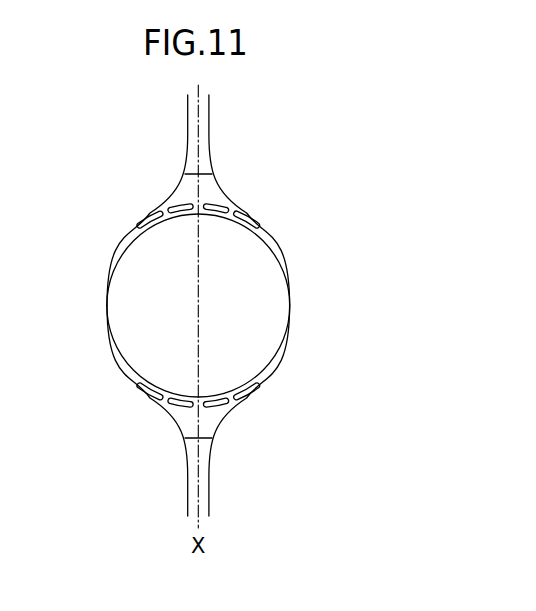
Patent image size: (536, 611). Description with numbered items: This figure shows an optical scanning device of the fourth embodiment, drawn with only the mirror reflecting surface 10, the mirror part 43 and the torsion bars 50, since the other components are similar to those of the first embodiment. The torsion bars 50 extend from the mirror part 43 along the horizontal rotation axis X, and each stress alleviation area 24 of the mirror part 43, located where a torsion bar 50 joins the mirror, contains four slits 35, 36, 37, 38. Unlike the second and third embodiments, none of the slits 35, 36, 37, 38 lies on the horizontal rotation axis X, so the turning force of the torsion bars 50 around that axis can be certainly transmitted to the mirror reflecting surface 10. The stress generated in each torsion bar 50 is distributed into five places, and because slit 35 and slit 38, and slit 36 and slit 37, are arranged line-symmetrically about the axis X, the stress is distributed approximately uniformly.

The mirror reflecting surface 10 is at (260, 302).
The stress alleviation area 24 is at (208, 193).
The slit 35 is at (150, 215).
The slit 36 is at (178, 205).
The slit 37 is at (218, 203).
The slit 38 is at (250, 216).
The mirror part 43 is at (350, 218).
The torsion bar 50 is at (200, 487).